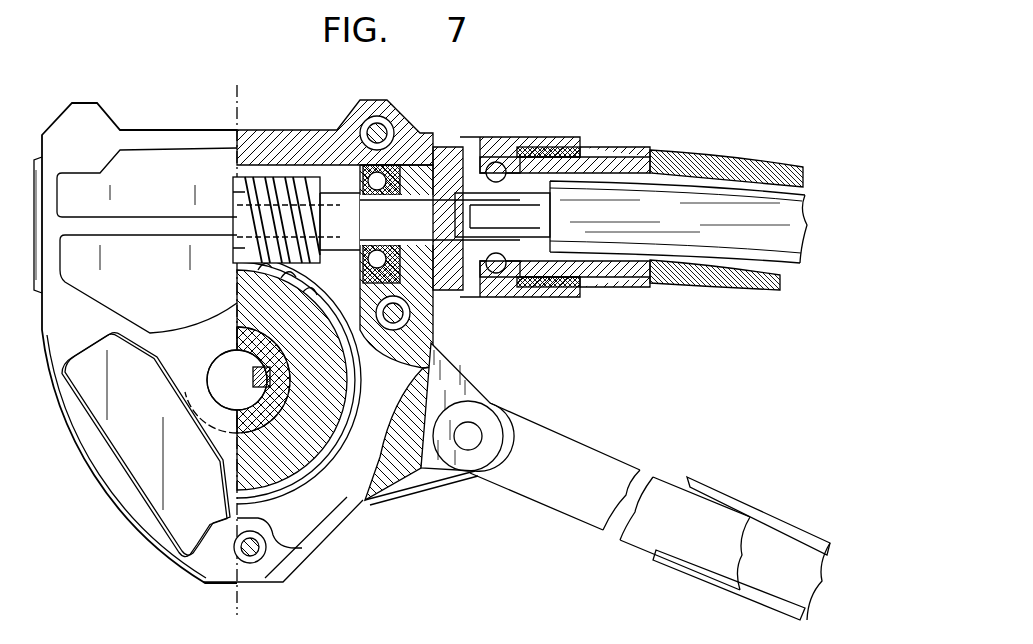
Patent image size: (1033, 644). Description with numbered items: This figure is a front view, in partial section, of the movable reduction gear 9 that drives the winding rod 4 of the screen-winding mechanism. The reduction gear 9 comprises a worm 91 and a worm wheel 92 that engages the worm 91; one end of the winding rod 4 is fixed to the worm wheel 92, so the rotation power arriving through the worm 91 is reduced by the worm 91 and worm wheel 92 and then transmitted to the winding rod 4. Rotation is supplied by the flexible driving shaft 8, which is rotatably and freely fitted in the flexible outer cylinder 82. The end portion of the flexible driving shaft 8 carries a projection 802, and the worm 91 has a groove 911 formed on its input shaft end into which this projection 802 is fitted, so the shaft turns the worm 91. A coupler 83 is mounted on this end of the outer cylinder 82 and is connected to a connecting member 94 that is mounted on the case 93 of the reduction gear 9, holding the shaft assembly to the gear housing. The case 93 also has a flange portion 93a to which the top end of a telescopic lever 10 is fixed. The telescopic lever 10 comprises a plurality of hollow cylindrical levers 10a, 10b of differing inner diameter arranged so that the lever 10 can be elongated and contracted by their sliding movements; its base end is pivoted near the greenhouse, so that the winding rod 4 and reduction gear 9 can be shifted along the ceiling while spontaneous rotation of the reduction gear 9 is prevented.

The movable reduction gear 9 is at (180, 125).
The worm 91 is at (300, 185).
The worm wheel 92 is at (260, 423).
The case 93 is at (55, 355).
The flange portion 93a is at (420, 470).
The connecting member 94 is at (443, 135).
The winding rod 4 is at (180, 375).
The flexible driving shaft 8 is at (698, 233).
The flexible outer cylinder 82 is at (692, 150).
The coupler 83 is at (605, 150).
The projection 802 is at (498, 217).
The groove 911 is at (508, 230).
The telescopic lever 10 is at (650, 508).
The hollow cylindrical lever 10a is at (547, 503).
The hollow cylindrical lever 10b is at (680, 573).